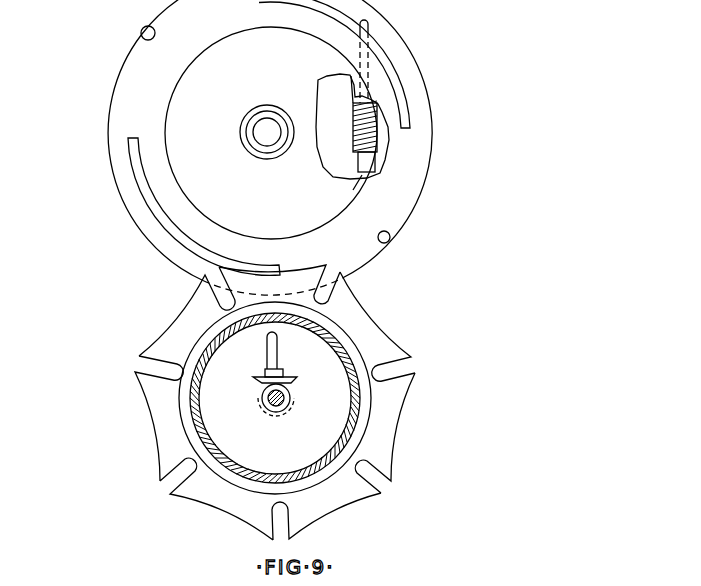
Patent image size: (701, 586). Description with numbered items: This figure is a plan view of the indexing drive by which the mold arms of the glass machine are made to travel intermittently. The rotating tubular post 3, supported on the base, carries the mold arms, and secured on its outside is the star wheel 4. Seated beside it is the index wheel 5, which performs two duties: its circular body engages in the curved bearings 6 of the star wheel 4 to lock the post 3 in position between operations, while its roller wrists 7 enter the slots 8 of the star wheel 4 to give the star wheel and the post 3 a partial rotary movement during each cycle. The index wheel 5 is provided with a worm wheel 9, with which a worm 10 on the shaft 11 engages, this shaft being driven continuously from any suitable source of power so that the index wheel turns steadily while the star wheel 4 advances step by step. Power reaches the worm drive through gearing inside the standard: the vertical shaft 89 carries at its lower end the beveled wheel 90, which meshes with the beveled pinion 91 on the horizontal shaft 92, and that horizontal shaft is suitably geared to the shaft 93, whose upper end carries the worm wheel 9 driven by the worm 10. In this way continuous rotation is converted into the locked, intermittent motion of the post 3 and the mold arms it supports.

The rotating tubular post 3 is at (192, 404).
The star wheel 4 is at (178, 346).
The index wheel 5 is at (132, 105).
The curved bearings 6 is at (148, 200).
The roller wrists 7 is at (141, 35).
The slots 8 is at (397, 370).
The worm wheel 9 is at (342, 156).
The worm 10 is at (368, 130).
The shaft 11 is at (366, 92).
The vertical shaft 89 is at (272, 412).
The beveled wheel 90 is at (264, 398).
The beveled pinion 91 is at (291, 381).
The horizontal shaft 92 is at (278, 351).
The shaft 93 is at (261, 134).